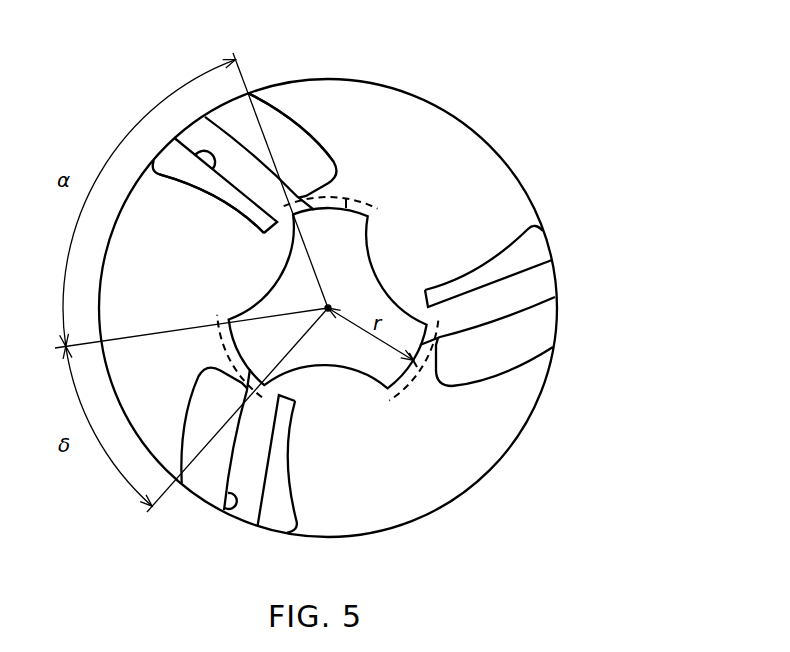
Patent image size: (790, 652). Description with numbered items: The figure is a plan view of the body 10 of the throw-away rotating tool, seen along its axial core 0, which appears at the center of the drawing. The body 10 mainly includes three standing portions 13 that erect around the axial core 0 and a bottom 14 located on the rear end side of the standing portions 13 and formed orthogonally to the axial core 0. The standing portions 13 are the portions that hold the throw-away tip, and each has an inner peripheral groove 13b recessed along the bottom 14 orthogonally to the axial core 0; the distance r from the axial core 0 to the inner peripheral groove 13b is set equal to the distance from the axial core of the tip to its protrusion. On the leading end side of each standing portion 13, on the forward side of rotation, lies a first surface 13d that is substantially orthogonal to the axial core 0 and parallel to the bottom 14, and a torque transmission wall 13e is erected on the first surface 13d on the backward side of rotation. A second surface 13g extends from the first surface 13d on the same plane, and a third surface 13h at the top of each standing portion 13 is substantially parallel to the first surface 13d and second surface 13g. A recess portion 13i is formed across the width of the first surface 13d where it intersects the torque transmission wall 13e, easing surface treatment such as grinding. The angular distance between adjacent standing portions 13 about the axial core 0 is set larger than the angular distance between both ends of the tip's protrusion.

The body 10 is at (619, 126).
The standing portion 13 is at (256, 66).
The inner peripheral groove 13b is at (368, 216).
The first surface 13d is at (243, 207).
The torque transmission wall 13e is at (225, 508).
The second surface 13g is at (338, 188).
The third surface 13h is at (303, 132).
The recess portion 13i is at (200, 167).
The bottom 14 is at (365, 276).
The axial core 0 is at (329, 300).